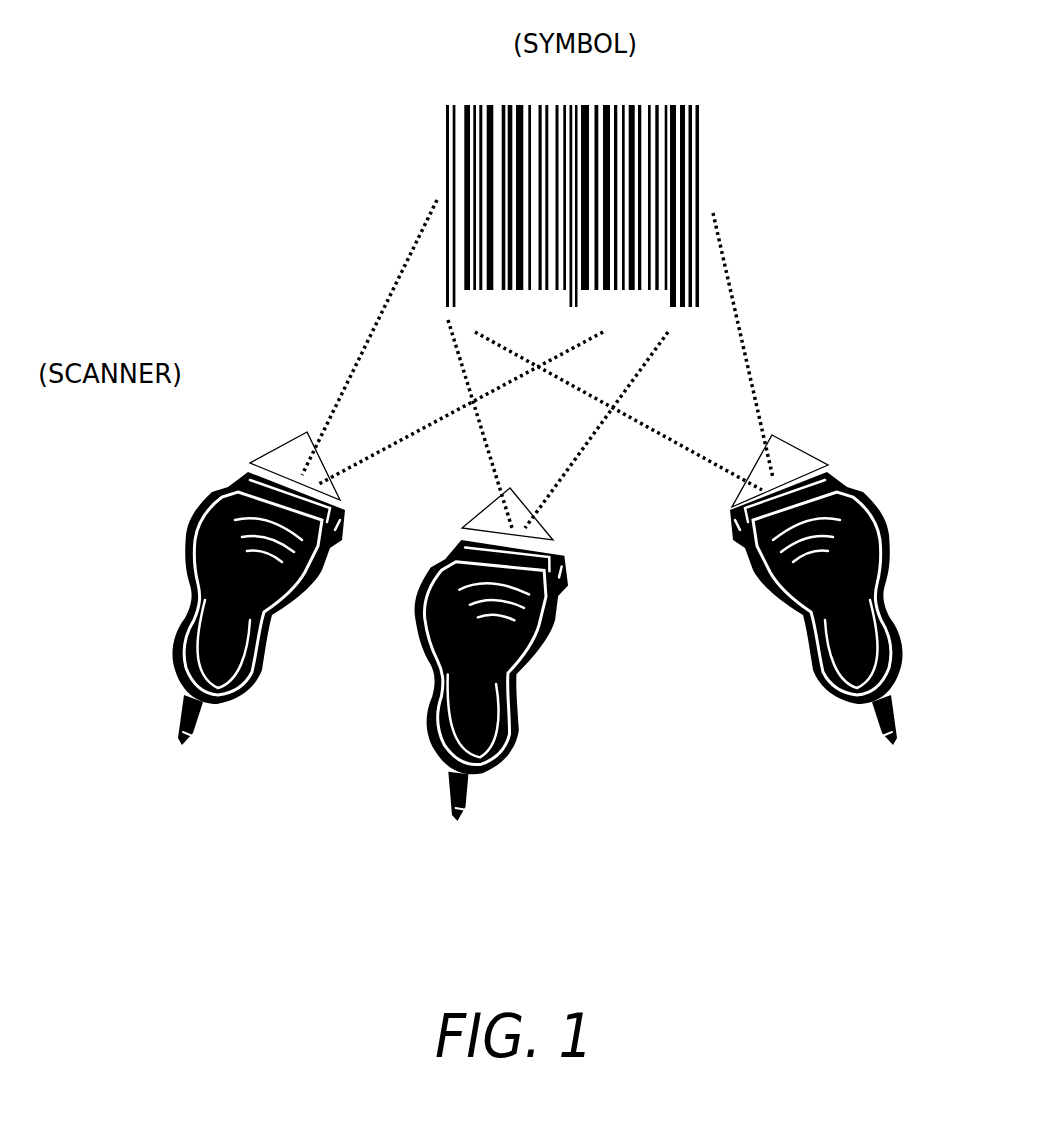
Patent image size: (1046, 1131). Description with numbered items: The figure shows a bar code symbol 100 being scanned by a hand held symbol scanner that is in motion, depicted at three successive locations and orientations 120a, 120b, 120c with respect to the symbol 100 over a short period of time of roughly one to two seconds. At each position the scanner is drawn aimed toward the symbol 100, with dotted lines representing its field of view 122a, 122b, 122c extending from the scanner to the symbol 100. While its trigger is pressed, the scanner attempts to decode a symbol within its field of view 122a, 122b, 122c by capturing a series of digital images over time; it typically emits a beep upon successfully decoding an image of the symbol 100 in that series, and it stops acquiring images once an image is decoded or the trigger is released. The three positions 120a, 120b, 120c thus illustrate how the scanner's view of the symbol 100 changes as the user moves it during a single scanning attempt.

The symbol 100 is at (488, 105).
The hand held symbol scanner position 120a is at (227, 487).
The hand held symbol scanner position 120b is at (432, 562).
The hand held symbol scanner position 120c is at (887, 500).
The field of view 122a is at (348, 390).
The field of view 122b is at (585, 448).
The field of view 122c is at (750, 377).